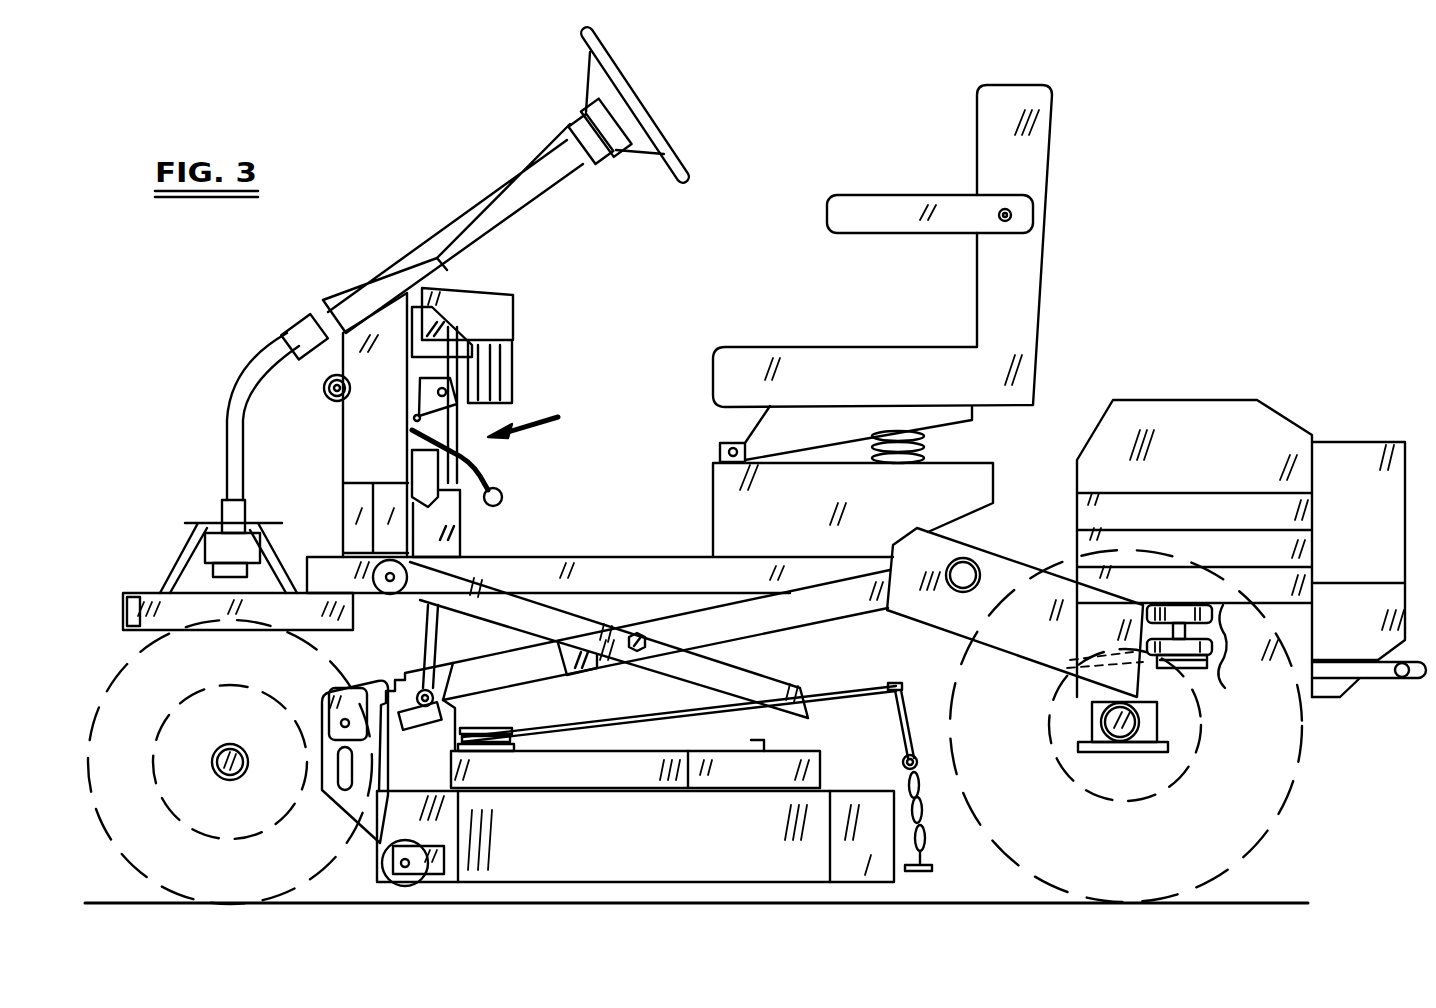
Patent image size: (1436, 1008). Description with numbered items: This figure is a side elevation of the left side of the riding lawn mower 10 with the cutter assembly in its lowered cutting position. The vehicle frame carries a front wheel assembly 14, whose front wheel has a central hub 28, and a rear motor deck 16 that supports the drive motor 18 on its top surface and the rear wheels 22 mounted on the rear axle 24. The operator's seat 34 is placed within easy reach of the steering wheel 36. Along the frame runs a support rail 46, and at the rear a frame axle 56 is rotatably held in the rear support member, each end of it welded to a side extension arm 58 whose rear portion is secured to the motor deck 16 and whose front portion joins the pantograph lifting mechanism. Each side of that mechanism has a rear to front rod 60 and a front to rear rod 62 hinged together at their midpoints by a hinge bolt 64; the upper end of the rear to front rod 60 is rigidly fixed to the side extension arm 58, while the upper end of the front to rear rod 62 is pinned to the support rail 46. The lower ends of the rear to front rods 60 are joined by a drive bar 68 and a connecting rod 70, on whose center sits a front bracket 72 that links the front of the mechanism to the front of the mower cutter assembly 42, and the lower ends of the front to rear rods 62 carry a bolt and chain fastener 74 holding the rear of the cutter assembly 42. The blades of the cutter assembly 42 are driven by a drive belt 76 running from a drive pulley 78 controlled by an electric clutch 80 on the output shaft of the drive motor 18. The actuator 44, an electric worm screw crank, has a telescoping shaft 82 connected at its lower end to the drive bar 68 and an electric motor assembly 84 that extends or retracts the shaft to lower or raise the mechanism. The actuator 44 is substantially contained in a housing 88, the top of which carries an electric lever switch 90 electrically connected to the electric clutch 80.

The riding lawn mower 10 is at (806, 133).
The front wheel assembly 14 is at (192, 610).
The rear motor deck 16 is at (1305, 672).
The drive motor 18 is at (1122, 410).
The rear wheels 22 is at (1197, 668).
The rear axle 24 is at (1120, 742).
The central hub 28 is at (222, 752).
The operator's seat 34 is at (1035, 158).
The steering wheel 36 is at (606, 162).
The mower cutter assembly 42 is at (800, 795).
The actuator 44 is at (538, 412).
The support rail 46 is at (558, 565).
The frame axle 56 is at (975, 565).
The side extension arm 58 is at (1085, 668).
The rear to front rod 60 is at (755, 622).
The front to rear rod 62 is at (578, 628).
The hinge bolt 64 is at (640, 654).
The drive bar 68 is at (400, 732).
The connecting rod 70 is at (345, 718).
The front bracket 72 is at (350, 843).
The bolt and chain fastener 74 is at (902, 695).
The drive belt 76 is at (742, 700).
The drive pulley 78 is at (1177, 668).
The electric clutch 80 is at (1207, 660).
The telescoping shaft 82 is at (437, 490).
The electric motor assembly 84 is at (485, 318).
The housing 88 is at (455, 545).
The electric lever switch 90 is at (462, 312).